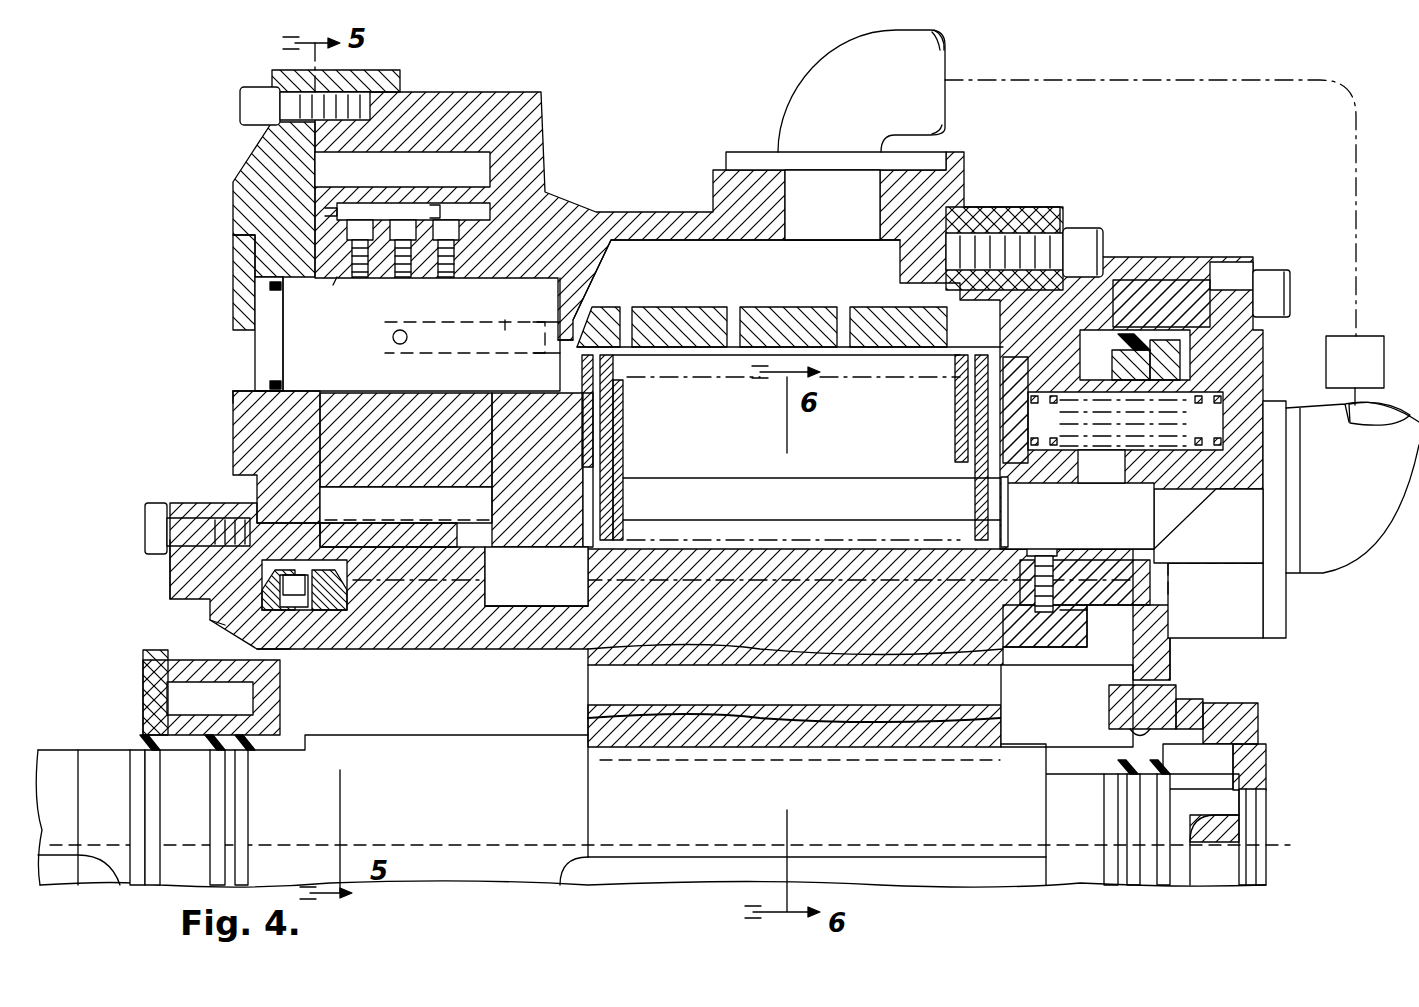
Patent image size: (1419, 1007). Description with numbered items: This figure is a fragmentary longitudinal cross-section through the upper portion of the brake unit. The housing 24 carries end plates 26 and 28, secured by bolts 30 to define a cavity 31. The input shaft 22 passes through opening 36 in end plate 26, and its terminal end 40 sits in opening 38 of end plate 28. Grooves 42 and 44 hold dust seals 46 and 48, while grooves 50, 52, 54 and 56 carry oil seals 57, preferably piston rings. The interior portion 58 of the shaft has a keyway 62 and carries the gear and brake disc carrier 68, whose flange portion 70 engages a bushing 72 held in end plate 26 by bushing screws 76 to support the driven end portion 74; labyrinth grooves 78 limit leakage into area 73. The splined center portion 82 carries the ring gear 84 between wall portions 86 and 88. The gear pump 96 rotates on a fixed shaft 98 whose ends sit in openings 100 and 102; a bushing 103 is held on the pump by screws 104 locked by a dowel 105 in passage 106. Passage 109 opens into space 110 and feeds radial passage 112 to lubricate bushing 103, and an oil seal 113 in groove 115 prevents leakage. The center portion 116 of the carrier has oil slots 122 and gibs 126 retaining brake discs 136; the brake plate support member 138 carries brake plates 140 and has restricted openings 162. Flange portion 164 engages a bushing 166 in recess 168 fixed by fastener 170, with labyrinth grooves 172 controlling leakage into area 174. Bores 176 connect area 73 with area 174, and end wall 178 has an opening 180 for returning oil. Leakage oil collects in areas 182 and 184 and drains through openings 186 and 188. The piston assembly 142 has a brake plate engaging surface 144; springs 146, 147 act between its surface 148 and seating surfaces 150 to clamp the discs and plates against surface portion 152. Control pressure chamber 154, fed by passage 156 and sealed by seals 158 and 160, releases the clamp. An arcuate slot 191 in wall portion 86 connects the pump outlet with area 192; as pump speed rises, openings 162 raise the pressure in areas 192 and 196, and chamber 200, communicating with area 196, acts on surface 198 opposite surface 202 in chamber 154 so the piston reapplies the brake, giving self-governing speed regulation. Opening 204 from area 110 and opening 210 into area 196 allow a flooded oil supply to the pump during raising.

The input shaft 22 is at (57, 750).
The housing 24 is at (1043, 213).
The end plate 26 is at (166, 599).
The end plate 28 is at (1172, 652).
The bolts 30 is at (1285, 278).
The cavity 31 is at (613, 272).
The opening 36 is at (189, 695).
The opening 38 is at (1180, 734).
The terminal end 40 is at (1256, 797).
The annular groove 42 is at (147, 750).
The annular groove 44 is at (1256, 815).
The dust seal 46 is at (133, 744).
The dust seal 48 is at (1246, 785).
The annular groove 50 is at (213, 804).
The annular groove 52 is at (242, 772).
The annular groove 54 is at (1133, 805).
The annular groove 56 is at (1103, 805).
The oil seals 57 is at (203, 745).
The interiorly disposed portion 58 is at (530, 820).
The keyway 62 is at (571, 882).
The gear and brake disc carrier 68 is at (588, 687).
The flange portion 70 is at (310, 641).
The bushing 72 is at (282, 542).
The area 73 is at (336, 708).
The driven end portion 74 is at (122, 872).
The bushing screws 76 is at (304, 585).
The grooves 78 is at (220, 619).
The splined center portion 82 is at (415, 585).
The ring gear 84 is at (536, 576).
The wall portion 86 is at (515, 537).
The wall portion 88 is at (320, 533).
The gear pump 96 is at (337, 441).
The fixed shaft 98 is at (333, 356).
The opening 100 is at (532, 200).
The opening 102 is at (300, 275).
The bushing 103 is at (337, 278).
The screws 104 is at (360, 280).
The dowel 105 is at (380, 203).
The axially extending passage 106 is at (430, 207).
The axially extending passage 109 is at (505, 330).
The space 110 is at (744, 273).
The radially extending passage 112 is at (405, 344).
The oil seal 113 is at (233, 403).
The groove 115 is at (277, 330).
The center portion 116 is at (806, 621).
The slots 122 is at (853, 578).
The gib 126 is at (996, 510).
The brake discs 136 is at (1001, 510).
The brake plate support member 138 is at (670, 310).
The brake plates 140 is at (955, 440).
The piston assembly 142 is at (1064, 491).
The brake plate engaging surface 144 is at (1010, 410).
The helical compression spring 146 is at (1125, 421).
The helical compression spring 147 is at (1190, 455).
The surface 148 is at (1009, 437).
The recessed seating surfaces 150 is at (1225, 412).
The opposed surface portion 152 is at (588, 420).
The control pressure chamber 154 is at (1123, 350).
The passage 156 is at (1110, 332).
The fluid seal 158 is at (1085, 348).
The fluid seal 160 is at (1140, 335).
The restricted openings 162 is at (632, 312).
The flange portion 164 is at (1003, 652).
The bushing 166 is at (1067, 605).
The recess 168 is at (1085, 595).
The threaded fastener 170 is at (1057, 545).
The grooves 172 is at (1093, 647).
The area 174 is at (1110, 705).
The bores 176 is at (835, 695).
The end wall 178 is at (1123, 663).
The opening 180 is at (1160, 630).
The area 182 is at (1210, 779).
The area 184 is at (240, 708).
The opening 186 is at (1259, 759).
The opening 188 is at (146, 668).
The arcuate shaped slot 191 is at (537, 470).
The area 192 is at (575, 588).
The area 196 is at (1132, 509).
The surface area 198 is at (1263, 342).
The chamber 200 is at (1180, 368).
The surface area 202 is at (1137, 300).
The opening 204 is at (852, 199).
The opening 210 is at (1208, 541).